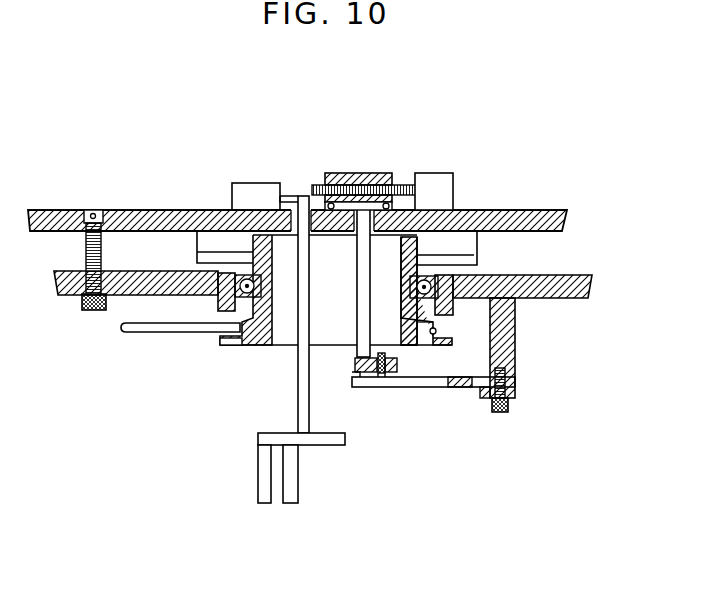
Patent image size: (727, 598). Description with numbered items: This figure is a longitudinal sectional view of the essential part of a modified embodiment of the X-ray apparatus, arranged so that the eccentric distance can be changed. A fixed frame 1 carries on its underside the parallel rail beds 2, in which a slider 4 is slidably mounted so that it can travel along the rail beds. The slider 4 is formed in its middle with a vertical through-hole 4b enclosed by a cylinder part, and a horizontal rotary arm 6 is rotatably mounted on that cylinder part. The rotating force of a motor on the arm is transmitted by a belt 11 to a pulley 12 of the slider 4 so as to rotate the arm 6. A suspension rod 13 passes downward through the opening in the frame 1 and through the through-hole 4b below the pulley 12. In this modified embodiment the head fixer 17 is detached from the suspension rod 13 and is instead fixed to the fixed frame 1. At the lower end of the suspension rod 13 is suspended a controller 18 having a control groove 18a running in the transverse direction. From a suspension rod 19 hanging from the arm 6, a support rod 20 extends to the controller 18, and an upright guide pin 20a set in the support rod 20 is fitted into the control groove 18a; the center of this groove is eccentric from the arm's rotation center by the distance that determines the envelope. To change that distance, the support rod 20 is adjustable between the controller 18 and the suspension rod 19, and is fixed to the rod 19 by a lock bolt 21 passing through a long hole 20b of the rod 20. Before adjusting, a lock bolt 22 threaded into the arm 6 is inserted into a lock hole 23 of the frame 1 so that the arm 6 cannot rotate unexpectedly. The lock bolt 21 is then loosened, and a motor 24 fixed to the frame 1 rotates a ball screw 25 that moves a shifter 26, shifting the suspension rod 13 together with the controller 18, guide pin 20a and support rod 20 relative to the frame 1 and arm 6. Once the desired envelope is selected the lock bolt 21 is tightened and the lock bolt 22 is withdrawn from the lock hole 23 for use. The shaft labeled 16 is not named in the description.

The fixed frame 1 is at (535, 218).
The rail bed 2 is at (204, 242).
The slider 4 is at (250, 208).
The through-hole 4b is at (279, 262).
The horizontal rotary arm 6 is at (587, 276).
The belt 11 is at (178, 335).
The pulley 12 is at (250, 347).
The suspension rod 13 is at (357, 261).
The central shaft 16 is at (304, 320).
The head fixer 17 is at (258, 465).
The controller 18 is at (398, 363).
The control groove 18a is at (350, 382).
The suspension rod 19 is at (503, 336).
The support rod 20 is at (436, 389).
The guide pin 20a is at (382, 378).
The long hole 20b is at (475, 395).
The lock bolt 21 is at (509, 413).
The lock bolt 22 is at (88, 312).
The lock hole 23 is at (93, 208).
The motor 24 is at (434, 183).
The ball screw 25 is at (400, 184).
The shifter 26 is at (335, 173).